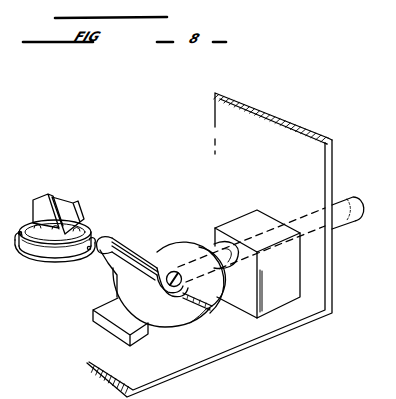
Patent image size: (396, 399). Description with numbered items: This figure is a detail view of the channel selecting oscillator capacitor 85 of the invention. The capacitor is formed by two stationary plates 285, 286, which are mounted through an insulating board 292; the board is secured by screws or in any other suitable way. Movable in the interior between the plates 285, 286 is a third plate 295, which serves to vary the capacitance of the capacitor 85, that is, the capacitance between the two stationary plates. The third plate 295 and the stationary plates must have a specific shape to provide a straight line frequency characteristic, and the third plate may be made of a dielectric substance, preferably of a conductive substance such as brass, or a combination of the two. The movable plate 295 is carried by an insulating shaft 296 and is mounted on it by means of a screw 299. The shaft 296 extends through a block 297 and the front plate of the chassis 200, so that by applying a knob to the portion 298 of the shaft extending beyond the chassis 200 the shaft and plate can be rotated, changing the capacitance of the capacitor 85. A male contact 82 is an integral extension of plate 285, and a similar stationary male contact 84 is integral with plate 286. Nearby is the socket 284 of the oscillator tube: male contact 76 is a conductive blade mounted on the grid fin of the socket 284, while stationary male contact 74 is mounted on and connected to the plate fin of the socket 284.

The chassis 200 is at (333, 270).
The block 297 is at (266, 222).
The insulating shaft 296 is at (221, 227).
The portion of shaft 298 is at (344, 206).
The plate 285 is at (172, 317).
The capacitor 85 is at (219, 313).
The plate 286 is at (204, 320).
The third plate 295 is at (161, 252).
The stationary male contact 84 is at (116, 234).
The male contact 82 is at (99, 254).
The screw 299 is at (171, 267).
The insulating board 292 is at (110, 331).
The socket 284 is at (43, 250).
The male contact 76 is at (37, 200).
The stationary male contact 74 is at (84, 203).